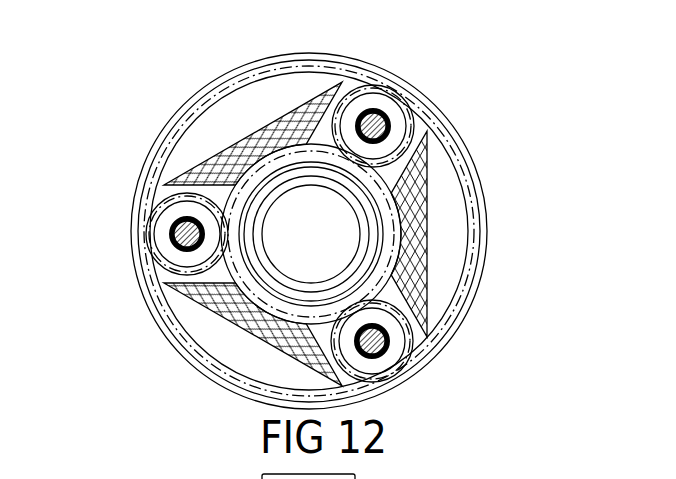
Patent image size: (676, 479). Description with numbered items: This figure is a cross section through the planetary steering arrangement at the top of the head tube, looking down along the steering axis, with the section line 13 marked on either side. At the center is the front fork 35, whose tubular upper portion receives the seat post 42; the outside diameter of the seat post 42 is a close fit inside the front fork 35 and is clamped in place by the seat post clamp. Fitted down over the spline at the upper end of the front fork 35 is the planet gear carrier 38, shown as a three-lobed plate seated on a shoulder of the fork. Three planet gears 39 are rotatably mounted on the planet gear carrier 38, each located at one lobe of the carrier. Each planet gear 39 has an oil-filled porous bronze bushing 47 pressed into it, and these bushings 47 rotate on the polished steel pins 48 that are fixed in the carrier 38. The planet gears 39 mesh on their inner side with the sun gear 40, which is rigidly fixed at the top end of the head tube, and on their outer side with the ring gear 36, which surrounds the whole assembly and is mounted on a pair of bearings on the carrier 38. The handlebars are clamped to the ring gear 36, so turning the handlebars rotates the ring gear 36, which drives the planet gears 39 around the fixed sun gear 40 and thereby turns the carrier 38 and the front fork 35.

The section line 13- 13 is at (130, 231).
The front fork 35 is at (348, 184).
The ring gear 36 is at (452, 320).
The planet gear carrier 38 is at (432, 276).
The planet gears 39 is at (414, 340).
The sun gear 40 is at (213, 313).
The seat post 42 is at (357, 218).
The oil-filled porous bronze bushing 47 is at (378, 116).
The polished steel pins 48 is at (392, 121).